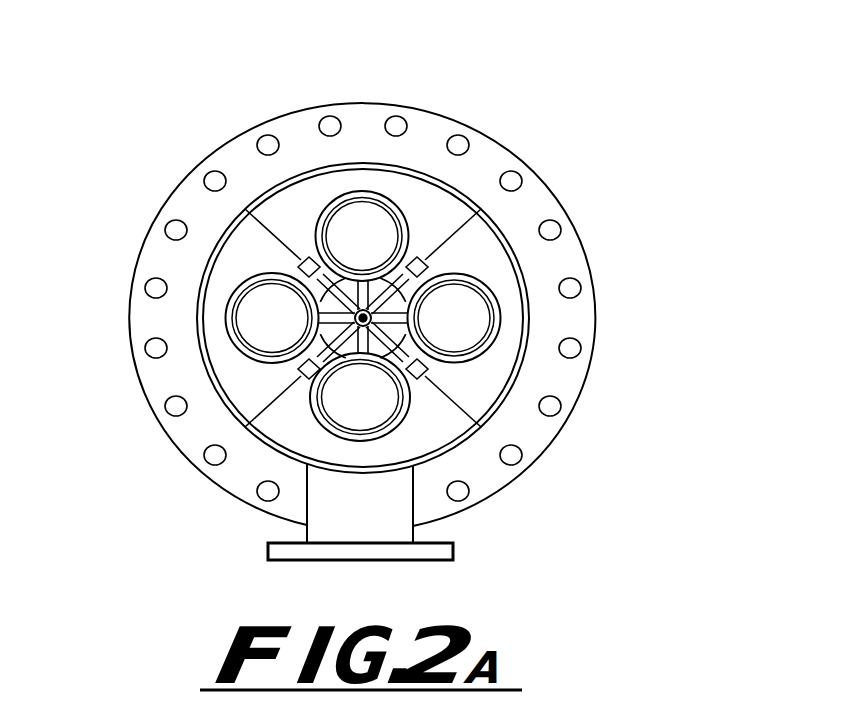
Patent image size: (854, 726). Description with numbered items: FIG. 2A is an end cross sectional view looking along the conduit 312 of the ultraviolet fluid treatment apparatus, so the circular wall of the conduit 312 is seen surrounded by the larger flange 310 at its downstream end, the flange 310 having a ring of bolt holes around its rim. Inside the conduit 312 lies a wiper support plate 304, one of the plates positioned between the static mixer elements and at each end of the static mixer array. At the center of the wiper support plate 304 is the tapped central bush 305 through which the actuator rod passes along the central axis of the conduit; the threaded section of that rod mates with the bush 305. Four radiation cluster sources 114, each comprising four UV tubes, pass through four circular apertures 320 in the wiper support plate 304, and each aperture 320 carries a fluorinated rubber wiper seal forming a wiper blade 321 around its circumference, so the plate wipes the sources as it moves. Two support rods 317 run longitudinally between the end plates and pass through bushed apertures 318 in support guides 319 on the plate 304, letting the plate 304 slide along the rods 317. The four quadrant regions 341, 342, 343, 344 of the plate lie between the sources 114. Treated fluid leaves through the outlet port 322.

The radiation cluster source 114 is at (257, 310).
The wiper support plate 304 is at (392, 217).
The tapped central bush 305 is at (370, 321).
The flange 310 is at (545, 192).
The conduit 312 is at (240, 232).
The support rod 317 is at (317, 197).
The bushed aperture 318 is at (318, 198).
The support guide 319 is at (330, 205).
The circular aperture 320 is at (497, 287).
The wiper blade 321 is at (492, 320).
The outlet port 322 is at (420, 565).
The first quadrant support 341 is at (485, 132).
The second quadrant support 342 is at (560, 225).
The third quadrant support 343 is at (427, 387).
The fourth quadrant support 344 is at (243, 377).